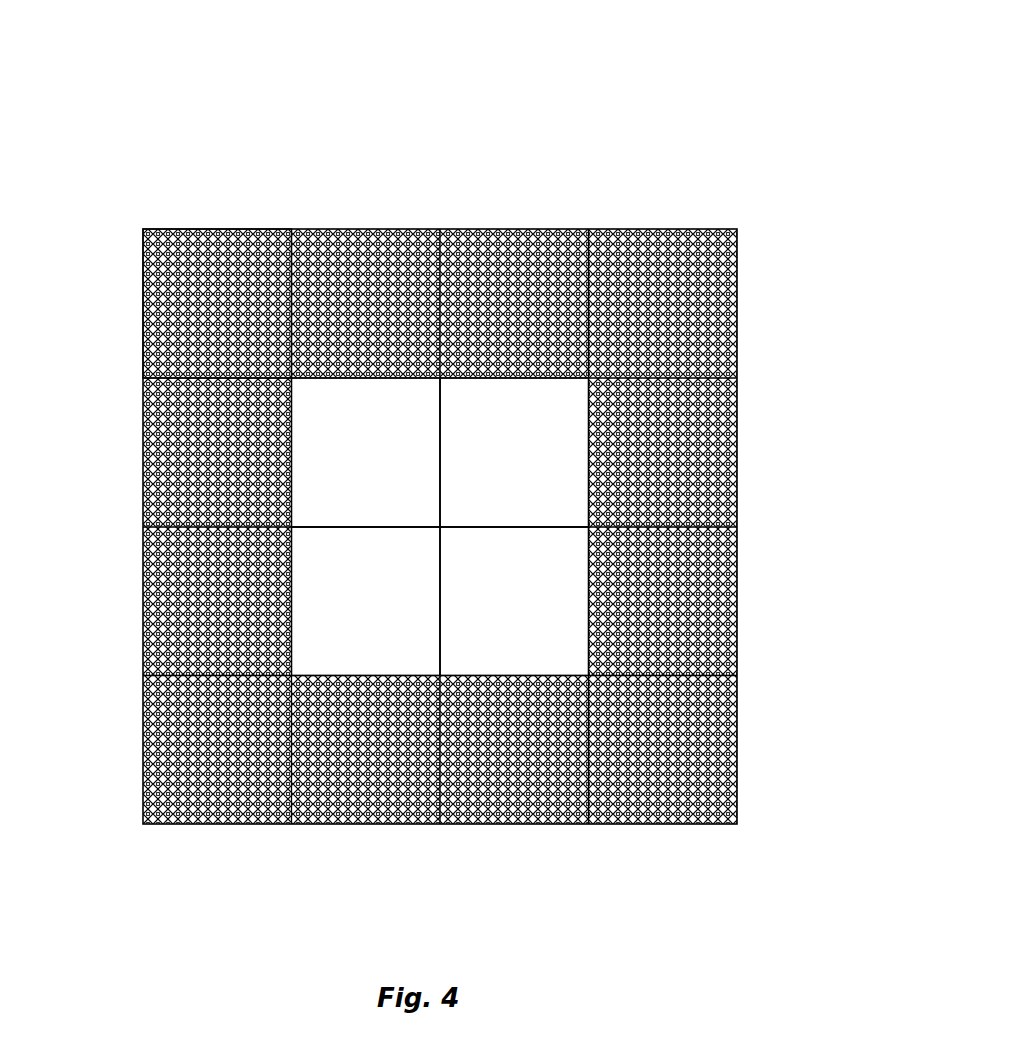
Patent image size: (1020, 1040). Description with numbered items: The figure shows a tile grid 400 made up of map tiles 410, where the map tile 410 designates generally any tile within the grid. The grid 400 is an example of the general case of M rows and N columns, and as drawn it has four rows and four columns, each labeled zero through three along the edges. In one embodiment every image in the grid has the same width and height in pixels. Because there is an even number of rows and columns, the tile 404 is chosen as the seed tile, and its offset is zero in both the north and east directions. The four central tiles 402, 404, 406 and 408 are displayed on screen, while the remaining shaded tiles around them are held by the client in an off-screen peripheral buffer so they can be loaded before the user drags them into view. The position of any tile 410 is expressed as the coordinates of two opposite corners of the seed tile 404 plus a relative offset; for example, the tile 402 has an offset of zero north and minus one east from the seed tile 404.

The tile grid 400 is at (772, 120).
The tile 402 is at (366, 452).
The seed tile 404 is at (514, 452).
The tile 406 is at (366, 601).
The tile 408 is at (514, 601).
The map tile 410 is at (197, 295).